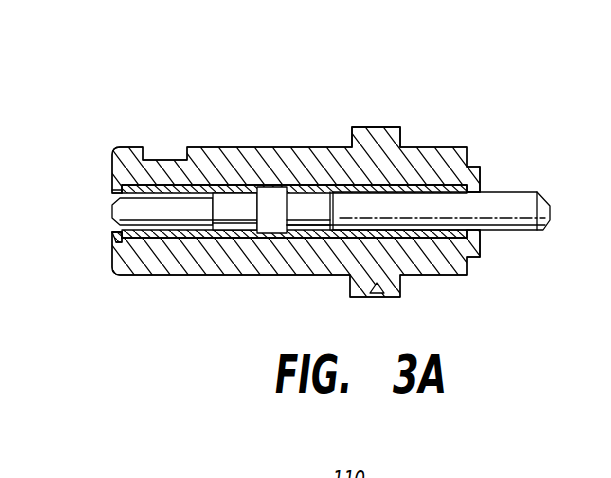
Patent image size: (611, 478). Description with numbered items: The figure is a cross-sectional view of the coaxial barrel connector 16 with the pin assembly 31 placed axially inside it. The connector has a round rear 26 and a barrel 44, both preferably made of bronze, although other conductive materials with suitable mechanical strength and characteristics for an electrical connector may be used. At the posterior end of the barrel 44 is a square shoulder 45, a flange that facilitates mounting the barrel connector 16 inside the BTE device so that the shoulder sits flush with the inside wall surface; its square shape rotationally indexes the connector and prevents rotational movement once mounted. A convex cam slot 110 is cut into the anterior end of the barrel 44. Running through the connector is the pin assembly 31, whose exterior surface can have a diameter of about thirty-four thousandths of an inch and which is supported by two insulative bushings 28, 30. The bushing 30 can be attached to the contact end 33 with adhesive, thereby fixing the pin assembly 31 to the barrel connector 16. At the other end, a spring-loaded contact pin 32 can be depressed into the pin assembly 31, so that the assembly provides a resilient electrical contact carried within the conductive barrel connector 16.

The barrel connector 16 is at (262, 97).
The cam slot 110 is at (165, 143).
The square shoulder 45 is at (376, 127).
The pin assembly 31 is at (498, 179).
The contact end 33 is at (525, 200).
The insulative bushing 30 is at (482, 247).
The round rear 26 is at (433, 262).
The insulative bushing 28 is at (120, 243).
The spring-loaded contact pin 32 is at (167, 208).
The barrel 44 is at (237, 262).